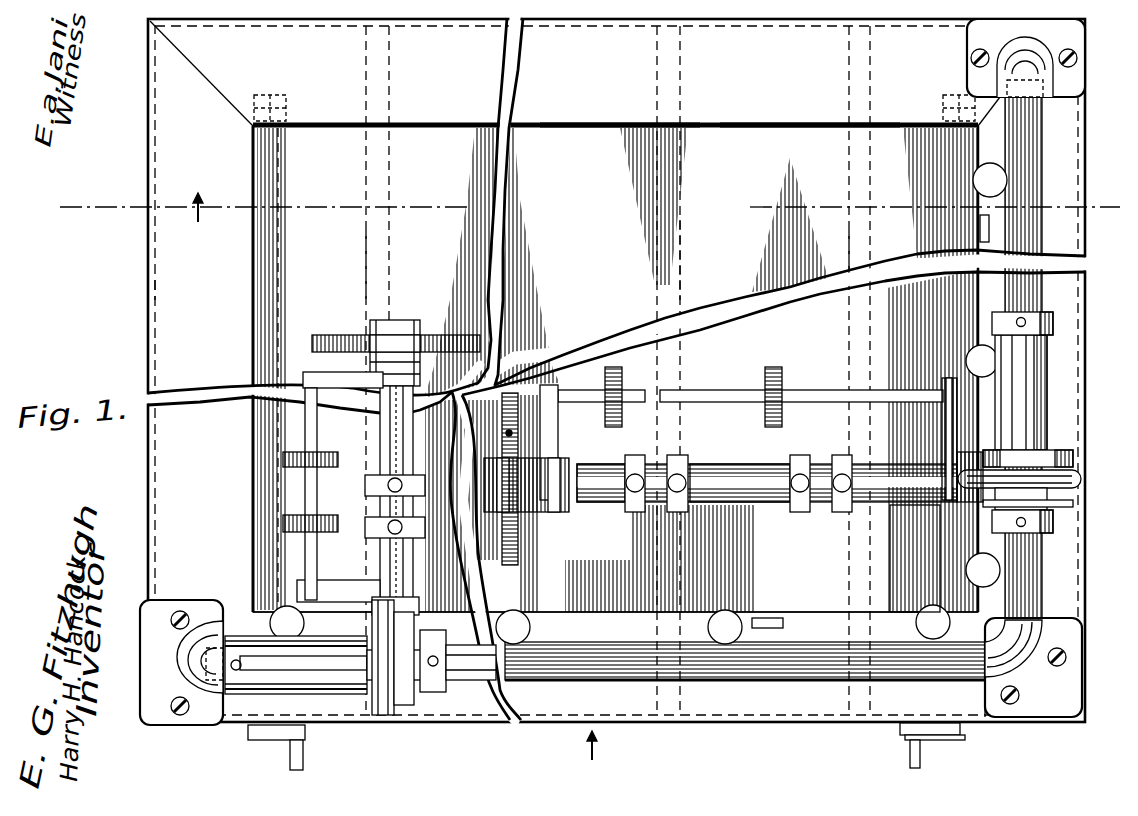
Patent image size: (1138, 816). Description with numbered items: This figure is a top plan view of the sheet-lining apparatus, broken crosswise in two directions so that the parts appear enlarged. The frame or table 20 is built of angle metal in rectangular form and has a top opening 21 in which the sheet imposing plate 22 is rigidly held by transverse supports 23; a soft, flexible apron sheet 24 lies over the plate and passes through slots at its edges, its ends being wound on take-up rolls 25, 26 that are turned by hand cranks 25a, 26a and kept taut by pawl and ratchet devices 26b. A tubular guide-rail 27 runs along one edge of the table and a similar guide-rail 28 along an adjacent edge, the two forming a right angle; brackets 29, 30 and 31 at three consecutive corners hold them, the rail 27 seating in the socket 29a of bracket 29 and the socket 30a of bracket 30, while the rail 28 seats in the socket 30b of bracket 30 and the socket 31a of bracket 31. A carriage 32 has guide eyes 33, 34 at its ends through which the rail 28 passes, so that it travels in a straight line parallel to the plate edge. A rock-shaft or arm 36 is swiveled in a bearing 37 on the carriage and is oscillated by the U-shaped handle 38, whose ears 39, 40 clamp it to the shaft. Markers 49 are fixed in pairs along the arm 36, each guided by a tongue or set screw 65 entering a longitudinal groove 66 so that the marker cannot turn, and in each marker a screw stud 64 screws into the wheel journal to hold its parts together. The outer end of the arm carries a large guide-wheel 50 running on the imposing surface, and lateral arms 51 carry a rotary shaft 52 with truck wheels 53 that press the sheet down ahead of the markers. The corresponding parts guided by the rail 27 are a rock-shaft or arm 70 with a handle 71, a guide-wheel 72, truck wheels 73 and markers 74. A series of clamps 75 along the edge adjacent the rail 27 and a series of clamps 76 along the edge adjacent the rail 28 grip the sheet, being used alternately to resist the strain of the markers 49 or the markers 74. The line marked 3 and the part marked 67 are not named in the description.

The section line 3 is at (590, 470).
The frame or table 20 is at (148, 310).
The top opening 21 is at (616, 123).
The sheet imposing plate 22 is at (799, 122).
The transverse supports 23 is at (366, 262).
The apron sheet 24 is at (615, 370).
The take-up roll 25 is at (262, 292).
The hand crank 25a is at (275, 755).
The take-up roll 26 is at (935, 560).
The hand crank 26a is at (942, 751).
The pawl and ratchet devices 26b is at (248, 742).
The guide-rail 27 is at (766, 676).
The guide-rail 28 is at (1042, 230).
The bracket 29 is at (206, 715).
The socket 29a is at (200, 645).
The bracket 30 is at (1033, 667).
The socket 30a is at (1000, 718).
The socket 30b is at (1038, 640).
The bracket 31 is at (1055, 45).
The socket 31a is at (1010, 55).
The carriage 32 is at (1037, 392).
The guide eye 33 is at (1053, 322).
The guide eye 34 is at (1053, 521).
The rock-shaft or arm 36 is at (730, 505).
The bearing 37 is at (1046, 456).
The U-shaped handle 38 is at (1081, 480).
The ear 39 is at (960, 470).
The ear 40 is at (1073, 458).
The markers 49 is at (672, 470).
The guide-wheel 50 is at (520, 546).
The lateral arms 51 is at (560, 440).
The rotary shaft 52 is at (728, 390).
The truck wheels 53 is at (622, 380).
The screw stud 64 is at (323, 676).
The tongue 65 is at (630, 476).
The longitudinal groove 66 is at (600, 506).
The shaft section 67 is at (740, 468).
The rock-shaft or arm 70 is at (378, 470).
The handle 71 is at (392, 718).
The guide-wheel 72 is at (356, 340).
The truck wheels 73 is at (298, 486).
The markers 74 is at (376, 580).
The clamps 75 is at (530, 626).
The clamps 76 is at (974, 355).